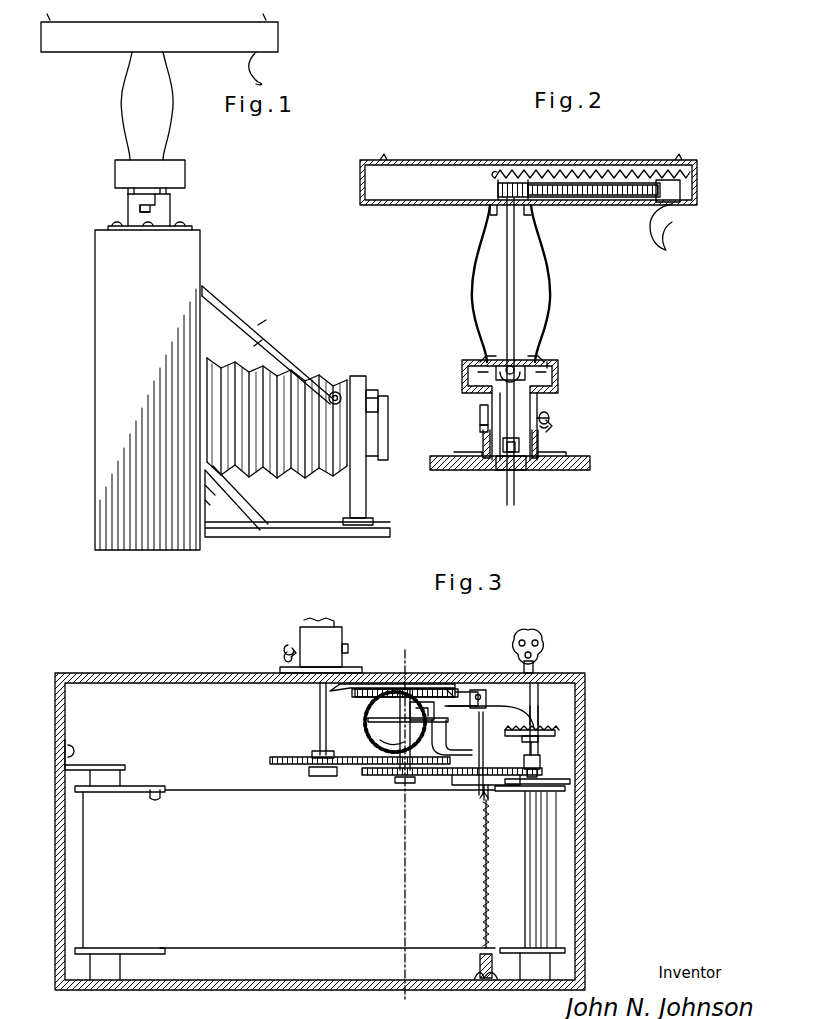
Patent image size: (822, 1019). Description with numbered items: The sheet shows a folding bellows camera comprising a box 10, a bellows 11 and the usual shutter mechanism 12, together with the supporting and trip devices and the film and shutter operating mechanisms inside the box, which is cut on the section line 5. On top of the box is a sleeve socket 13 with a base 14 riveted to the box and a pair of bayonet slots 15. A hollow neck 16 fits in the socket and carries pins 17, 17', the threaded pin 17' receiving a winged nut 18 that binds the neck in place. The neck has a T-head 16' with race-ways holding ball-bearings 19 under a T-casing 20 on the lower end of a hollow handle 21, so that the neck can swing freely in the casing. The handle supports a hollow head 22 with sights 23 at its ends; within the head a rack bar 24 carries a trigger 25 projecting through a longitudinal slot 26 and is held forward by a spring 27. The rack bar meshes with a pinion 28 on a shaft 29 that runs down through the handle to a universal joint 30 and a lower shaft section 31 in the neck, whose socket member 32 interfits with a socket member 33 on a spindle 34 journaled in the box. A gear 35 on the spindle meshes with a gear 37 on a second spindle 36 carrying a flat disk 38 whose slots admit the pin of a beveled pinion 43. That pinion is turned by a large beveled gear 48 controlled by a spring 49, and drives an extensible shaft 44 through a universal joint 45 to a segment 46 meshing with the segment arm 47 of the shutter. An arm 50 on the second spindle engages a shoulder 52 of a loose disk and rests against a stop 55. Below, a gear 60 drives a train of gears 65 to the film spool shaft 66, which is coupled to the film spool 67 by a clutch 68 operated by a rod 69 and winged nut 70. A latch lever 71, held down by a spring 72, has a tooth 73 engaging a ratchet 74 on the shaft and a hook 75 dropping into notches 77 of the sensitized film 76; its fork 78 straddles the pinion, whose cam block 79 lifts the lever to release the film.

In FIG. 3, the section line 5 is at (405, 825).
In FIG. 1, the box 10 is at (102, 268).
In FIG. 1, the bellows 11 is at (298, 464).
In FIG. 1, the shutter mechanism 12 is at (362, 386).
In FIG. 1, the sleeve socket 13 is at (167, 212).
In FIG. 2, the sleeve socket 13 is at (478, 445).
In FIG. 3, the sleeve socket 13 is at (321, 647).
In FIG. 1, the base 14 is at (186, 227).
In FIG. 2, the base 14 is at (560, 454).
In FIG. 3, the base 14 is at (350, 662).
In FIG. 1, the bayonet slots 15 is at (168, 194).
In FIG. 2, the bayonet slots 15 is at (480, 418).
In FIG. 1, the hollow neck 16 is at (108, 197).
In FIG. 2, the hollow neck 16 is at (556, 426).
In FIG. 3, the hollow neck 16 is at (328, 608).
In FIG. 2, the T-head 16' is at (580, 351).
In FIG. 1, the pin 17 is at (110, 214).
In FIG. 2, the pin 17 is at (467, 425).
In FIG. 3, the pin 17 is at (354, 641).
In FIG. 2, the threaded pin 17' is at (567, 422).
In FIG. 2, the winged nut 18 is at (548, 420).
In FIG. 3, the winged nut 18 is at (292, 648).
In FIG. 2, the ball-bearings 19 is at (548, 362).
In FIG. 1, the T-casing 20 is at (150, 174).
In FIG. 2, the T-casing 20 is at (560, 373).
In FIG. 1, the handle 21 is at (147, 106).
In FIG. 2, the handle 21 is at (550, 296).
In FIG. 1, the head 22 is at (159, 37).
In FIG. 2, the head 22 is at (466, 166).
In FIG. 1, the sights 23 is at (57, 19).
In FIG. 2, the sights 23 is at (385, 160).
In FIG. 2, the rack bar 24 is at (612, 192).
In FIG. 1, the trigger 25 is at (262, 62).
In FIG. 2, the trigger 25 is at (668, 226).
In FIG. 2, the longitudinal slot 26 is at (656, 200).
In FIG. 2, the spring 27 is at (606, 168).
In FIG. 2, the pinion 28 is at (515, 186).
In FIG. 2, the shaft 29 is at (516, 250).
In FIG. 2, the universal joint 30 is at (488, 360).
In FIG. 2, the lower shaft section 31 is at (508, 405).
In FIG. 2, the socket member 32 is at (522, 446).
In FIG. 2, the socket member 33 is at (500, 468).
In FIG. 2, the spindle 34 is at (520, 496).
In FIG. 3, the spindle 34 is at (320, 710).
In FIG. 3, the gear 35 is at (292, 756).
In FIG. 3, the second spindle 36 is at (380, 714).
In FIG. 3, the gear 37 is at (368, 758).
In FIG. 3, the flat disk 38 is at (372, 722).
In FIG. 3, the pinion 43 is at (448, 740).
In FIG. 1, the extensible shaft 44 is at (236, 320).
In FIG. 1, the universal joint 45 is at (334, 390).
In FIG. 1, the segment 46 is at (388, 403).
In FIG. 1, the segment arm 47 is at (378, 392).
In FIG. 3, the beveled gear 48 is at (352, 692).
In FIG. 3, the spring 49 is at (418, 682).
In FIG. 3, the radially extending arm 50 is at (440, 690).
In FIG. 3, the shoulder 52 is at (482, 700).
In FIG. 3, the stop 55 is at (462, 690).
In FIG. 3, the gear 60 is at (380, 774).
In FIG. 3, the train of gears 65 is at (480, 772).
In FIG. 3, the film spool shaft 66 is at (546, 754).
In FIG. 3, the film spool 67 is at (565, 780).
In FIG. 3, the clutch 68 is at (546, 766).
In FIG. 3, the rod 69 is at (540, 690).
In FIG. 3, the winged nut 70 is at (548, 646).
In FIG. 3, the latch lever 71 is at (478, 718).
In FIG. 3, the spring 72 is at (480, 848).
In FIG. 3, the tooth 73 is at (538, 716).
In FIG. 3, the ratchet 74 is at (556, 730).
In FIG. 3, the hook 75 is at (490, 794).
In FIG. 3, the sensitized film 76 is at (315, 860).
In FIG. 3, the notches 77 is at (156, 790).
In FIG. 3, the fork 78 is at (440, 726).
In FIG. 3, the cam block 79 is at (398, 734).